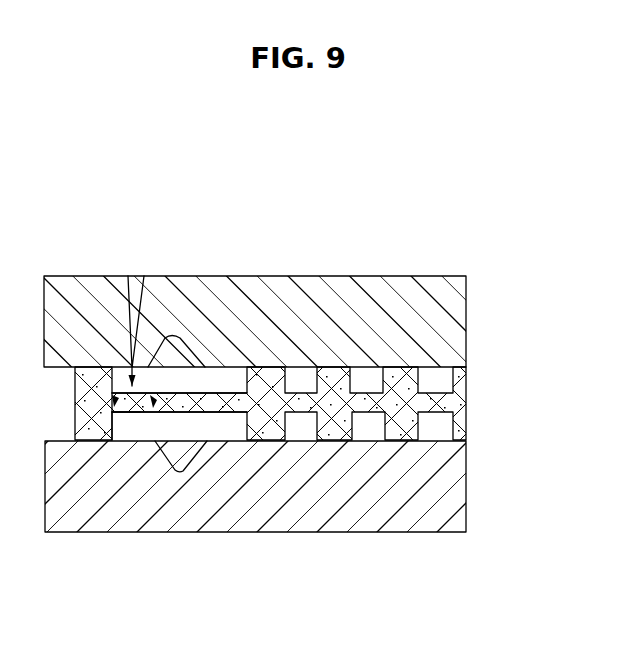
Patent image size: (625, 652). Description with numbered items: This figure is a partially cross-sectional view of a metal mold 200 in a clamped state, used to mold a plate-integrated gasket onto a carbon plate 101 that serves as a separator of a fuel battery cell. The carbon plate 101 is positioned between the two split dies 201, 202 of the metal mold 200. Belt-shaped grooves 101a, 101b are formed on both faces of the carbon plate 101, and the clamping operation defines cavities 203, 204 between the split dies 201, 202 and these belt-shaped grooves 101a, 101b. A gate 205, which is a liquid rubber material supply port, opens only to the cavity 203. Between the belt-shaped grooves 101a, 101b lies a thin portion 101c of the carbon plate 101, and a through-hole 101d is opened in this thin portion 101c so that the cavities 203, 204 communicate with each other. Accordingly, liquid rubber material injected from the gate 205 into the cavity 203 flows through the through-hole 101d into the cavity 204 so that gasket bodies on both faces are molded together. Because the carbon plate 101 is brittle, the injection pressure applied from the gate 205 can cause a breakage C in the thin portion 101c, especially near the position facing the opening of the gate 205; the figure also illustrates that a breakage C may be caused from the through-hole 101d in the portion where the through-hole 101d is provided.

The carbon plate 101 is at (473, 401).
The belt-shaped groove 101a is at (238, 373).
The belt-shaped groove 101b is at (113, 417).
The thin portion 101c is at (207, 414).
The through-hole 101d is at (131, 414).
The metal mold 200 is at (352, 268).
The split die 201 is at (405, 313).
The split die 202 is at (405, 520).
The cavity 203 is at (180, 350).
The cavity 204 is at (181, 453).
The gate 205 is at (128, 276).
The breakage C is at (73, 394).